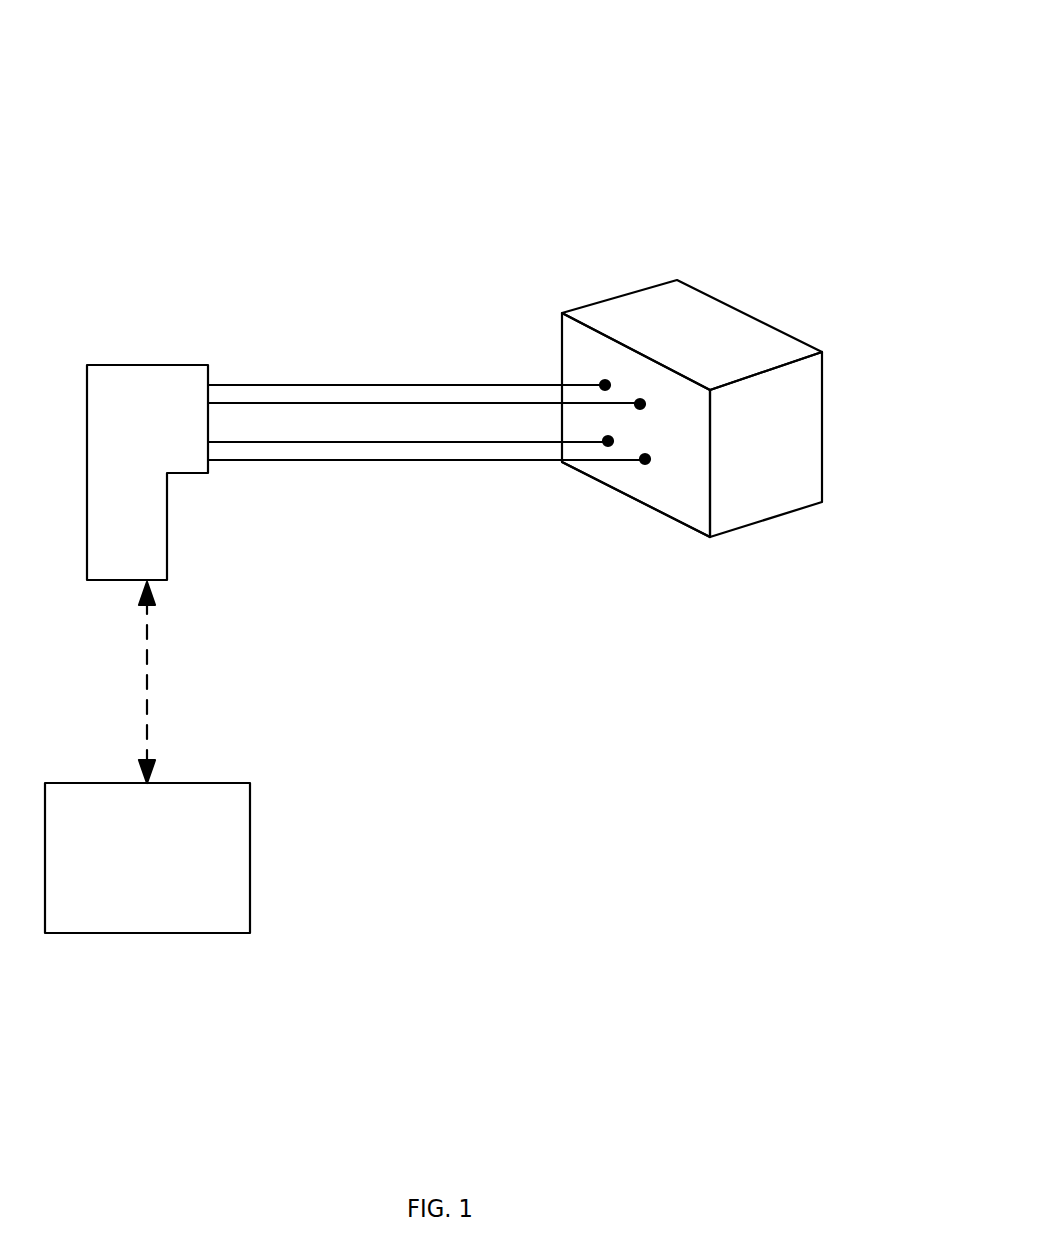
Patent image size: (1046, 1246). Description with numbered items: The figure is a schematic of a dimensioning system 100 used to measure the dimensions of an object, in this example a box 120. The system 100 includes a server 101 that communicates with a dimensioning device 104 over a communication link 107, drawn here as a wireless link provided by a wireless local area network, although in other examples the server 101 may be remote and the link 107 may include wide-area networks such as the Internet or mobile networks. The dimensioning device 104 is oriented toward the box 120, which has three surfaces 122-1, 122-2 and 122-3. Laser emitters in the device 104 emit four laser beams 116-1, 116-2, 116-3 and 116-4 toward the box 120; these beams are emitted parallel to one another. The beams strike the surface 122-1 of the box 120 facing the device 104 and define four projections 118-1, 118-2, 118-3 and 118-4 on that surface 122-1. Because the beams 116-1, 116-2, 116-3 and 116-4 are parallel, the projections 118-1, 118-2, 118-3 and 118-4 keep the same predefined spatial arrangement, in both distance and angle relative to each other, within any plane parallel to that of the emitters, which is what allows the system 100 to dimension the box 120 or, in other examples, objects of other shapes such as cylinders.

The dimensioning system 100 is at (364, 116).
The server 101 is at (169, 856).
The dimensioning device 104 is at (143, 365).
The communication link 107 is at (173, 682).
The laser beam 116-1 is at (278, 385).
The laser beam 116-2 is at (355, 403).
The laser beam 116-3 is at (272, 442).
The laser beam 116-4 is at (365, 460).
The projection 118-1 is at (605, 385).
The projection 118-2 is at (640, 404).
The projection 118-3 is at (608, 441).
The projection 118-4 is at (645, 462).
The box 120 is at (745, 315).
The surface 122-1 is at (700, 523).
The surface 122-2 is at (798, 457).
The surface 122-3 is at (677, 298).